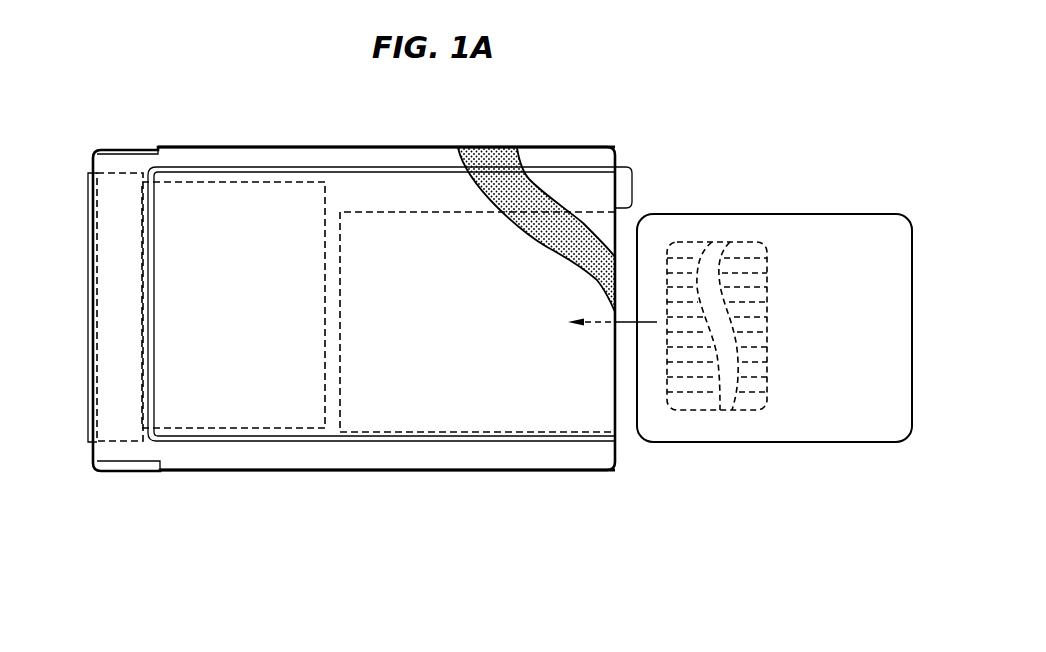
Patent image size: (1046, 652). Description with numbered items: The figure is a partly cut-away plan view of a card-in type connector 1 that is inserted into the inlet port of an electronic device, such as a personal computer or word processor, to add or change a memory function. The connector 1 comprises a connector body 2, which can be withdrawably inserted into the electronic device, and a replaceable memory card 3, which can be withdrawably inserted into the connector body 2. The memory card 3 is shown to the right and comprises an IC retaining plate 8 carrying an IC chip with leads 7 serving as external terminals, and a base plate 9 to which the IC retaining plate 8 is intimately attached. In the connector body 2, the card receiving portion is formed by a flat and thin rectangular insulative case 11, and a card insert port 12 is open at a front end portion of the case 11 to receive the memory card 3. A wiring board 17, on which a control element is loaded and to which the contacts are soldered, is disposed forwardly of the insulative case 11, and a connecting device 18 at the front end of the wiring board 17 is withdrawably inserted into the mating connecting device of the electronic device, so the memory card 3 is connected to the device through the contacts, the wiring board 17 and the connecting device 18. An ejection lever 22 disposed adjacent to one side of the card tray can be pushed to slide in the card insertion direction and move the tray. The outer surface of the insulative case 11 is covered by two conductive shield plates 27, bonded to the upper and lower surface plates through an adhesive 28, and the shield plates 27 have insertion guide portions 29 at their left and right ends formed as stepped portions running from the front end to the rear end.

The card-in type connector 1 is at (647, 168).
The connector body 2 is at (362, 147).
The memory card 3 is at (774, 294).
The leads 7 is at (755, 278).
The IC retaining plate 8 is at (767, 323).
The base plate 9 is at (850, 242).
The insulative case 11 is at (412, 212).
The card insert port 12 is at (621, 400).
The wiring board 17 is at (243, 182).
The connecting device 18 is at (87, 417).
The ejection lever 22 is at (623, 185).
The shield plates 27 is at (522, 262).
The adhesive 28 is at (503, 194).
The insertion guide portions 29 is at (432, 158).